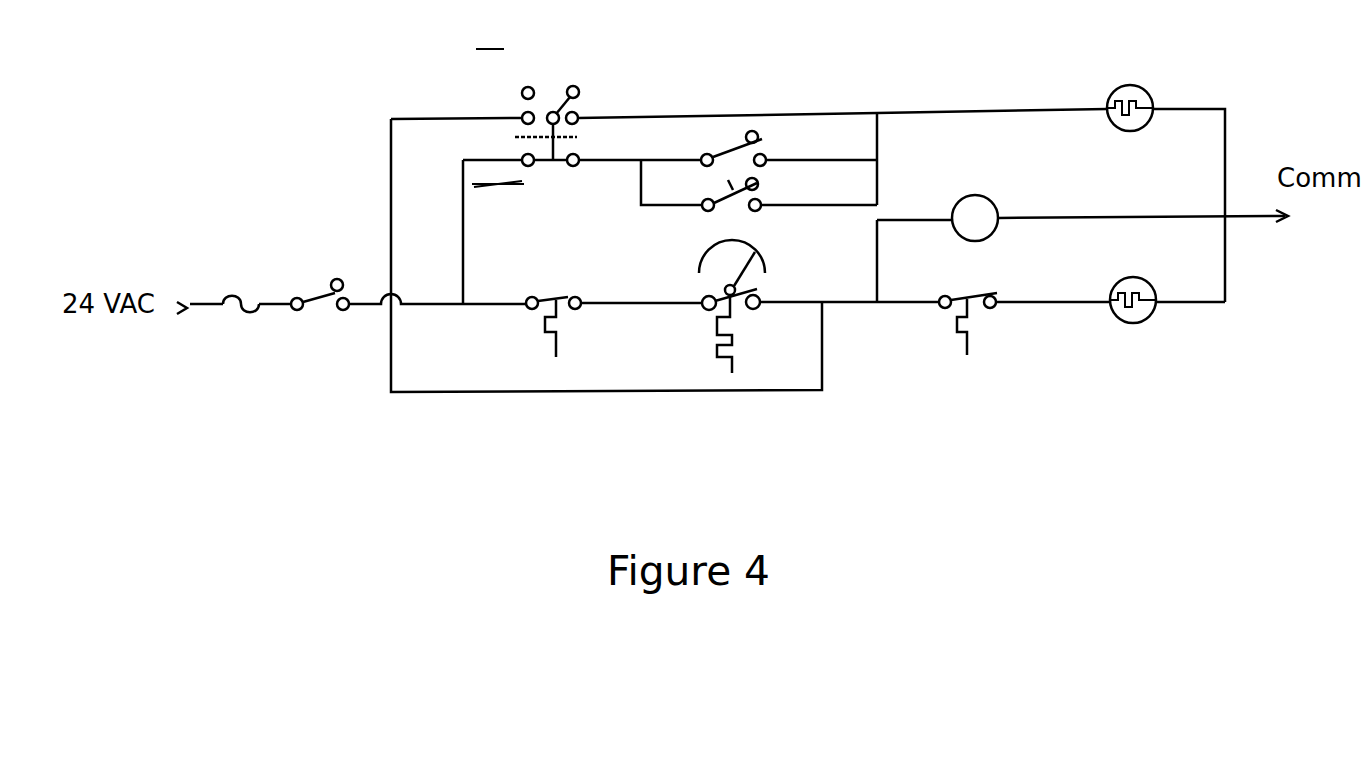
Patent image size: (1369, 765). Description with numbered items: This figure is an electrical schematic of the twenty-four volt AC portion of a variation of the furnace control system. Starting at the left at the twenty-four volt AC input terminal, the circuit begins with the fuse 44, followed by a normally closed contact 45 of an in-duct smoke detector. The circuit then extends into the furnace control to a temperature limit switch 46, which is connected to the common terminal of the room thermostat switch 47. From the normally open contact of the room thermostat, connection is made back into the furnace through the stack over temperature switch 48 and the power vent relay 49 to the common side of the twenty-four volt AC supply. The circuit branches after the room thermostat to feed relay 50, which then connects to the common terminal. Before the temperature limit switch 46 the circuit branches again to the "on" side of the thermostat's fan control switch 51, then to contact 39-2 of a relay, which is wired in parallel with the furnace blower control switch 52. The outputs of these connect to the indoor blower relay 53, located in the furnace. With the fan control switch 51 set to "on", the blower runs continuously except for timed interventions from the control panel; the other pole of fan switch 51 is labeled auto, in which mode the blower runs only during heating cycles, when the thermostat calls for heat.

The fuse 44 is at (232, 285).
The normally closed contact of in-duct smoke detector 45 is at (308, 283).
The fan control switch 51 is at (553, 85).
The contact of relay 39 39-2 is at (727, 133).
The furnace blower control switch 52 is at (695, 215).
The temperature limit switch 46 is at (548, 286).
The room thermostat switch 47 is at (703, 325).
The stack over temperature switch 48 is at (948, 325).
The power vent relay 49 is at (1147, 325).
The relay 50 is at (972, 193).
The indoor blower relay 53 is at (1128, 77).